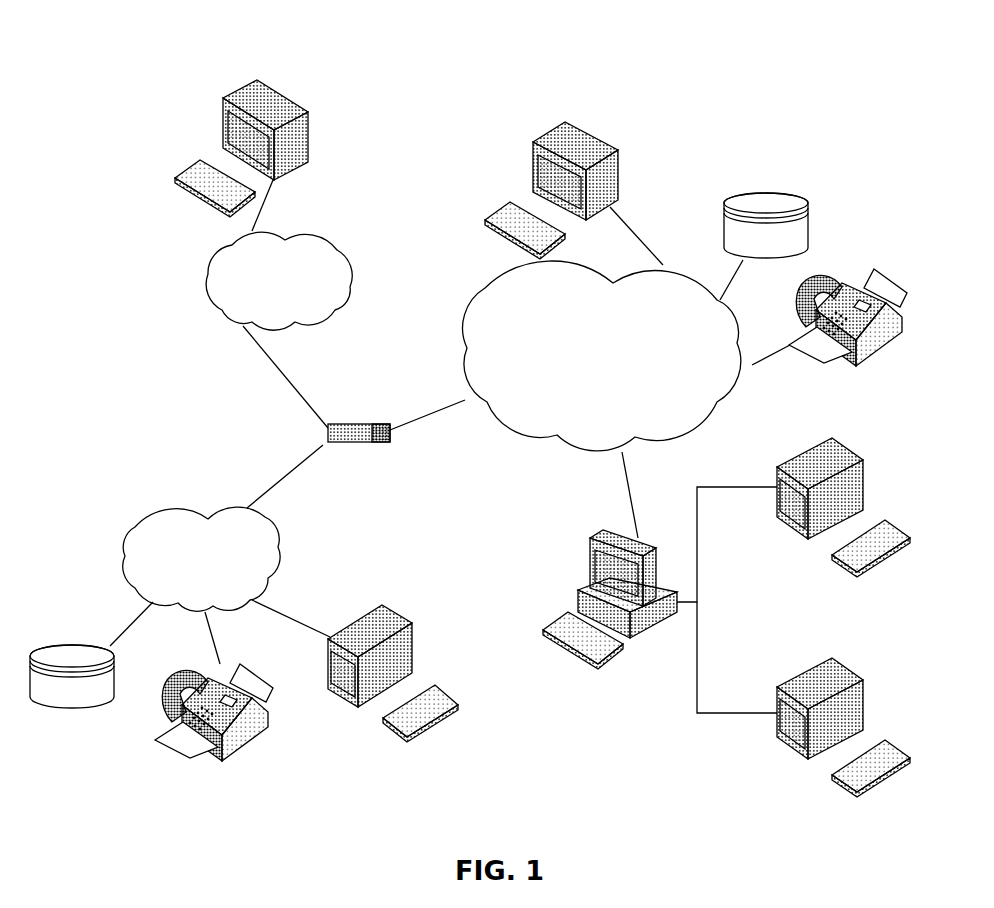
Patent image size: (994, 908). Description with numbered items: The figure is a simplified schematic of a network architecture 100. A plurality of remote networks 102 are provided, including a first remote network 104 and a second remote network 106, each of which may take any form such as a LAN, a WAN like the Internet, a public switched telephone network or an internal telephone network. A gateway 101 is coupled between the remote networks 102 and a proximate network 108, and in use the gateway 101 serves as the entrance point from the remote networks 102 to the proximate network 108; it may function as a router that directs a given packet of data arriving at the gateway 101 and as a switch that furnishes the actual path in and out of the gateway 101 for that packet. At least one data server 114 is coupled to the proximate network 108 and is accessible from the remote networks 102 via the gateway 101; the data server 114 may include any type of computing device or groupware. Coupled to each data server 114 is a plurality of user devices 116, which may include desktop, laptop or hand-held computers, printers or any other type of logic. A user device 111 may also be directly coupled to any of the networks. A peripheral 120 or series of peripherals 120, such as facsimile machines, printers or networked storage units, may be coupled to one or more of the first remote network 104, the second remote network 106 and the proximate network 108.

The network architecture 100 is at (142, 52).
The gateway 101 is at (340, 423).
The remote networks 102 is at (182, 341).
The first remote network 104 is at (130, 537).
The second remote network 106 is at (348, 252).
The proximate network 108 is at (712, 425).
The user device 111 is at (618, 153).
The data server 114 is at (590, 552).
The user devices 116 is at (308, 120).
The peripheral 120 is at (807, 203).